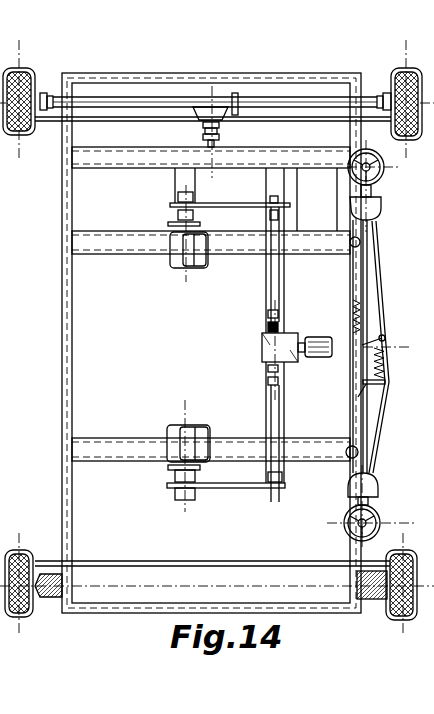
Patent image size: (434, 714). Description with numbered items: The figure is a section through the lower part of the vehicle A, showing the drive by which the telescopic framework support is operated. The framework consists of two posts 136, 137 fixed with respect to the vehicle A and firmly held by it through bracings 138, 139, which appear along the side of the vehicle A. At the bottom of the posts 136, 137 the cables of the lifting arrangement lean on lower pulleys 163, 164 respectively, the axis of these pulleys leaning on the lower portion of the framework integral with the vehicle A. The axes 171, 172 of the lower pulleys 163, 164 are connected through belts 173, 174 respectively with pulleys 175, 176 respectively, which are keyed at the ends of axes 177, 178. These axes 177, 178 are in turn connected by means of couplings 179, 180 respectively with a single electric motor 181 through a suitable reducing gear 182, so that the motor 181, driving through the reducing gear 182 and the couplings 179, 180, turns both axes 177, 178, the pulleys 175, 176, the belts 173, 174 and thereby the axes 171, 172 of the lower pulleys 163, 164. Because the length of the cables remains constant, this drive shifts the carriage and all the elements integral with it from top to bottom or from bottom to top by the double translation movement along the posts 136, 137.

The vehicle A is at (56, 297).
The post 136 is at (170, 263).
The post 137 is at (170, 430).
The bracing 138 is at (360, 243).
The bracing 139 is at (358, 451).
The lower pulley 163 is at (168, 223).
The lower pulley 164 is at (172, 474).
The axis of lower pulley 171 is at (200, 223).
The axis of lower pulley 172 is at (200, 467).
The belt 173 is at (229, 205).
The belt 174 is at (258, 489).
The pulley 175 is at (290, 205).
The pulley 176 is at (283, 486).
The axis 177 is at (280, 278).
The axis 178 is at (271, 395).
The coupling 179 is at (268, 325).
The coupling 180 is at (268, 372).
The electric motor 181 is at (319, 337).
The reducing gear 182 is at (262, 350).